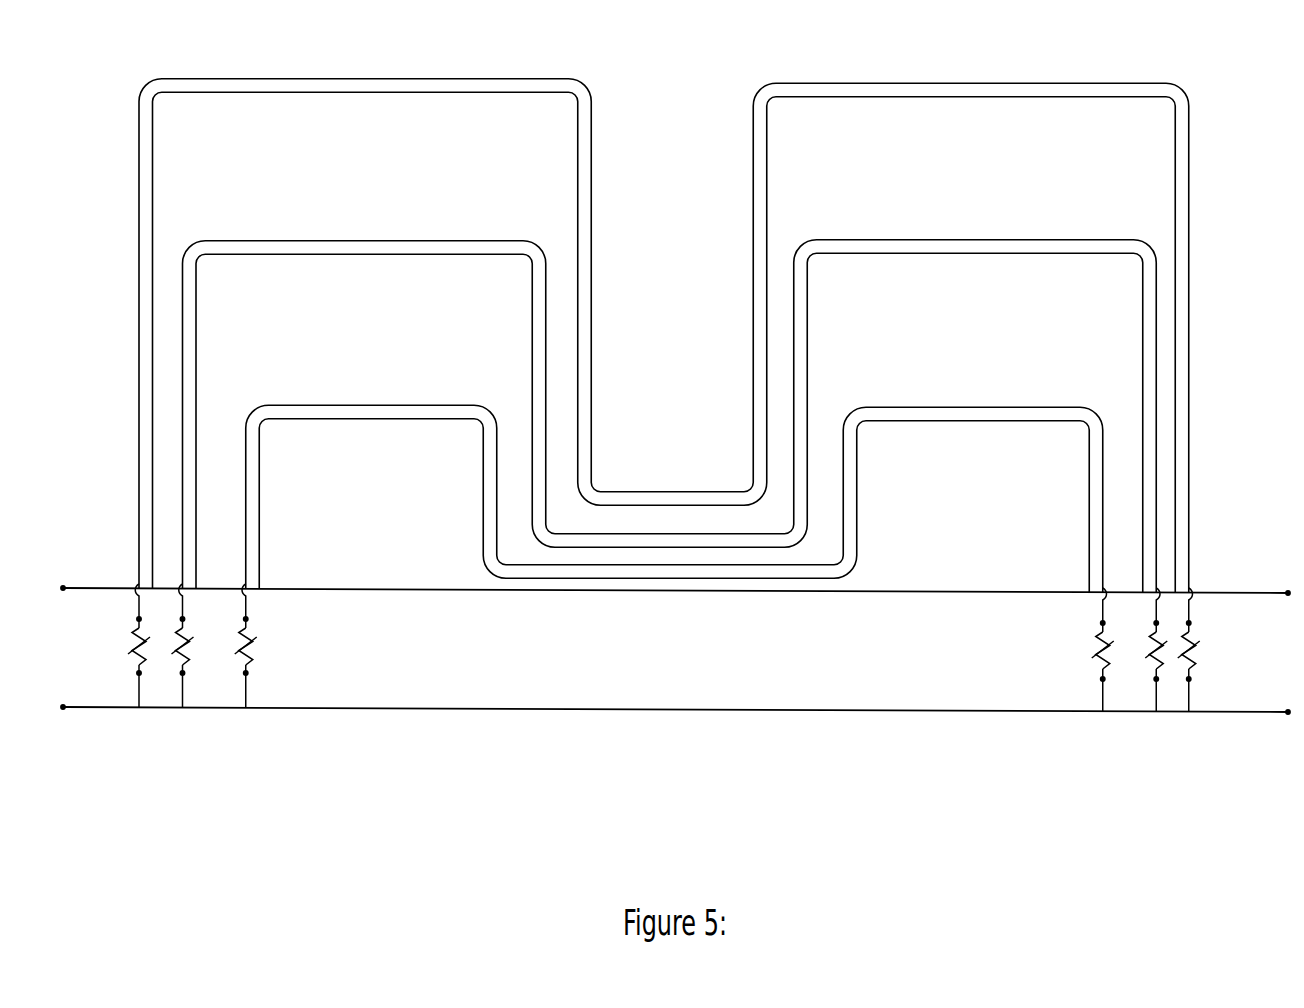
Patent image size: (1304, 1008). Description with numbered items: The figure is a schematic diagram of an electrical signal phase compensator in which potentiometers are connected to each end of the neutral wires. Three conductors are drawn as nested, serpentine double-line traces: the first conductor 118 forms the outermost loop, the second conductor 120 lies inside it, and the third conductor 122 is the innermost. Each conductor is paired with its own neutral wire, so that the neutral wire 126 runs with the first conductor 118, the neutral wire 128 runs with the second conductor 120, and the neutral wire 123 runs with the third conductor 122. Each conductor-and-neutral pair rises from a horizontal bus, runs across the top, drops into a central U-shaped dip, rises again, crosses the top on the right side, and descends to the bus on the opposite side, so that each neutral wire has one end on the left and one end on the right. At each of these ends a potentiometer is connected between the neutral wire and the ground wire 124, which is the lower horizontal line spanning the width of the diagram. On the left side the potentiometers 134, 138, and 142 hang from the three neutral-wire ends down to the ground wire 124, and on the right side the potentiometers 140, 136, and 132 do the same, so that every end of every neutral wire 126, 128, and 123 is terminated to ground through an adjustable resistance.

The first conductor 118 is at (664, 312).
The second conductor 120 is at (670, 381).
The third conductor 122 is at (674, 462).
The neutral wire 123 is at (470, 398).
The ground wire 124 is at (695, 715).
The neutral wire 126 is at (480, 80).
The neutral wire 128 is at (518, 238).
The potentiometer 132 is at (1180, 668).
The potentiometer 134 is at (165, 667).
The potentiometer 136 is at (1145, 665).
The potentiometer 138 is at (203, 660).
The potentiometer 140 is at (1093, 663).
The termination resistor 142 is at (262, 657).